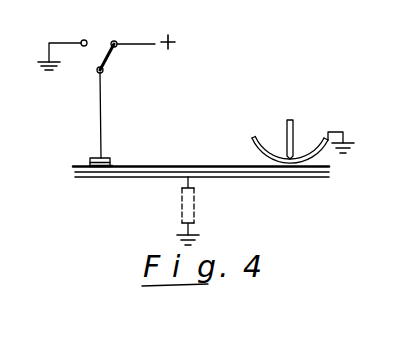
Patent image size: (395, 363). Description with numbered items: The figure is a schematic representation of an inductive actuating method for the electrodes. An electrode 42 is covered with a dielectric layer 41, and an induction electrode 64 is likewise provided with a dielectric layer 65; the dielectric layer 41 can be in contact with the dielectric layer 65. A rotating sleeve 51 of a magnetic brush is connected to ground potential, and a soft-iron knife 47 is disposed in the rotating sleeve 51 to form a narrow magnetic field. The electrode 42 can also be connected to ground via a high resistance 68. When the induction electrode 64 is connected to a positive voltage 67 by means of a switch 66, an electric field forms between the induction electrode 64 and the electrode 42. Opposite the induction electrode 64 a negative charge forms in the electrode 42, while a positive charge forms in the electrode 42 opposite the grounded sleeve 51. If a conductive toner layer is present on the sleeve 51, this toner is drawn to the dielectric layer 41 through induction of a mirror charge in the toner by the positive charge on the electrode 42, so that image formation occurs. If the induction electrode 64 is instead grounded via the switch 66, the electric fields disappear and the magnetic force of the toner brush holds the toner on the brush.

The dielectric layer 41 is at (74, 166).
The electrode 42 is at (76, 177).
The soft-iron knife 47 is at (289, 121).
The rotating sleeve 51 is at (253, 137).
The induction electrode 64 is at (108, 158).
The dielectric layer 65 is at (112, 166).
The switch 66 is at (108, 57).
The positive voltage 67 is at (150, 43).
The high resistance 68 is at (194, 204).